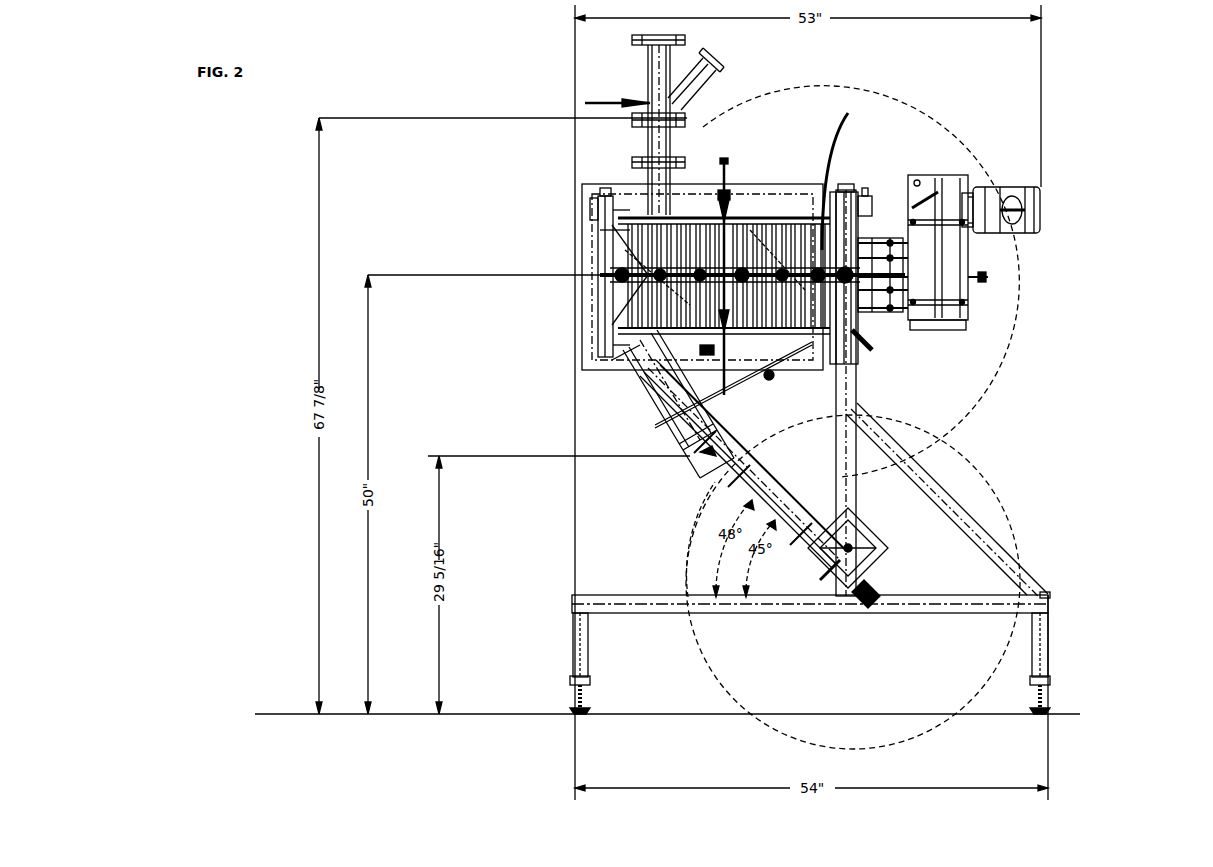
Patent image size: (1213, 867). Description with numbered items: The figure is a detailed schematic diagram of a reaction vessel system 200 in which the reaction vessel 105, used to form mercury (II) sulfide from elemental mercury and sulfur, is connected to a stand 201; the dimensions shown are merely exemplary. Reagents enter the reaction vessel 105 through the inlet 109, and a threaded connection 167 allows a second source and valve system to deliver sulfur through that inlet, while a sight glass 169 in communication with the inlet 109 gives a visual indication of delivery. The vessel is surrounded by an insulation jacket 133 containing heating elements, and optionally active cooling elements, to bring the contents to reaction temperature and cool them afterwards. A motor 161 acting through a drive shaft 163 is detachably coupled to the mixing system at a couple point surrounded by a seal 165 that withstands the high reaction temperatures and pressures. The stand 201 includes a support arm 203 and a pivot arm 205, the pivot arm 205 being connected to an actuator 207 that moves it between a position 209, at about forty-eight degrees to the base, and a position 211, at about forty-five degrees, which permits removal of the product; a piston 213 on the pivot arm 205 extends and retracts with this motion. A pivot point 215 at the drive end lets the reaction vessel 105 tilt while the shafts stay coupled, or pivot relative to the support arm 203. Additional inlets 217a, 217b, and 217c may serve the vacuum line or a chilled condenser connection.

The reaction vessel 105 is at (508, 255).
The inlet 109 is at (656, 176).
The insulation jacket 133 is at (597, 204).
The motor 161 is at (1045, 205).
The drive shaft 163 is at (884, 220).
The seal 165 is at (880, 323).
The threaded connection 167 is at (707, 70).
The sight glass 169 is at (672, 146).
The reaction vessel system 200 is at (1152, 92).
The stand 201 is at (1053, 577).
The support arm 203 is at (870, 402).
The pivot arm 205 is at (795, 523).
The actuator 207 is at (882, 558).
The position 209 is at (598, 230).
The position 211 is at (665, 420).
The piston 213 is at (697, 447).
The pivot point 215 is at (854, 180).
The inlet 217a is at (740, 385).
The inlet 217b is at (729, 160).
The inlet 217c is at (590, 103).